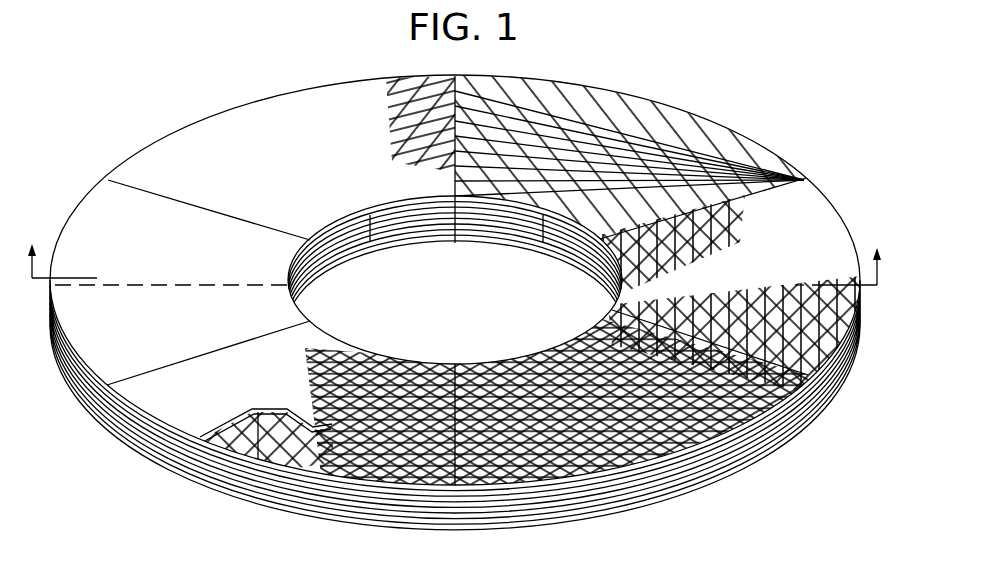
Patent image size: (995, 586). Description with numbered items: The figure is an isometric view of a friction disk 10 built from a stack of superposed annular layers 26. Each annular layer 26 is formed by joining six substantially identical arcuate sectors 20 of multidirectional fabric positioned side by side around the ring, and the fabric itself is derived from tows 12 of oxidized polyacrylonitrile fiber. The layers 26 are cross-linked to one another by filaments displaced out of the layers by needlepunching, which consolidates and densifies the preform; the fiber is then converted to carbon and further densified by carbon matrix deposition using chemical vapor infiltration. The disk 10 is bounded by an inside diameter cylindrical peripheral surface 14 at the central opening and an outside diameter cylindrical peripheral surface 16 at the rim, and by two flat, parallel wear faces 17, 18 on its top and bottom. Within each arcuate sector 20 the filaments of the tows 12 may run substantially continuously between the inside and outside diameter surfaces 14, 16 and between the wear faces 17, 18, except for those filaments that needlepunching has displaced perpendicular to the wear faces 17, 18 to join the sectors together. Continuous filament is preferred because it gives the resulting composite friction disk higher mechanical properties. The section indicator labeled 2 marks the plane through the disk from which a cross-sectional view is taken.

The friction disk 10 is at (216, 77).
The tows 12 is at (543, 110).
The inside diameter cylindrical peripheral surface 14 is at (573, 262).
The outside diameter cylindrical peripheral surface 16 is at (187, 472).
The wear face 17 is at (148, 343).
The wear face 18 is at (140, 453).
The arcuate sector 20 is at (298, 105).
The annular layer 26 is at (810, 213).
The section line 2- 2 is at (455, 240).